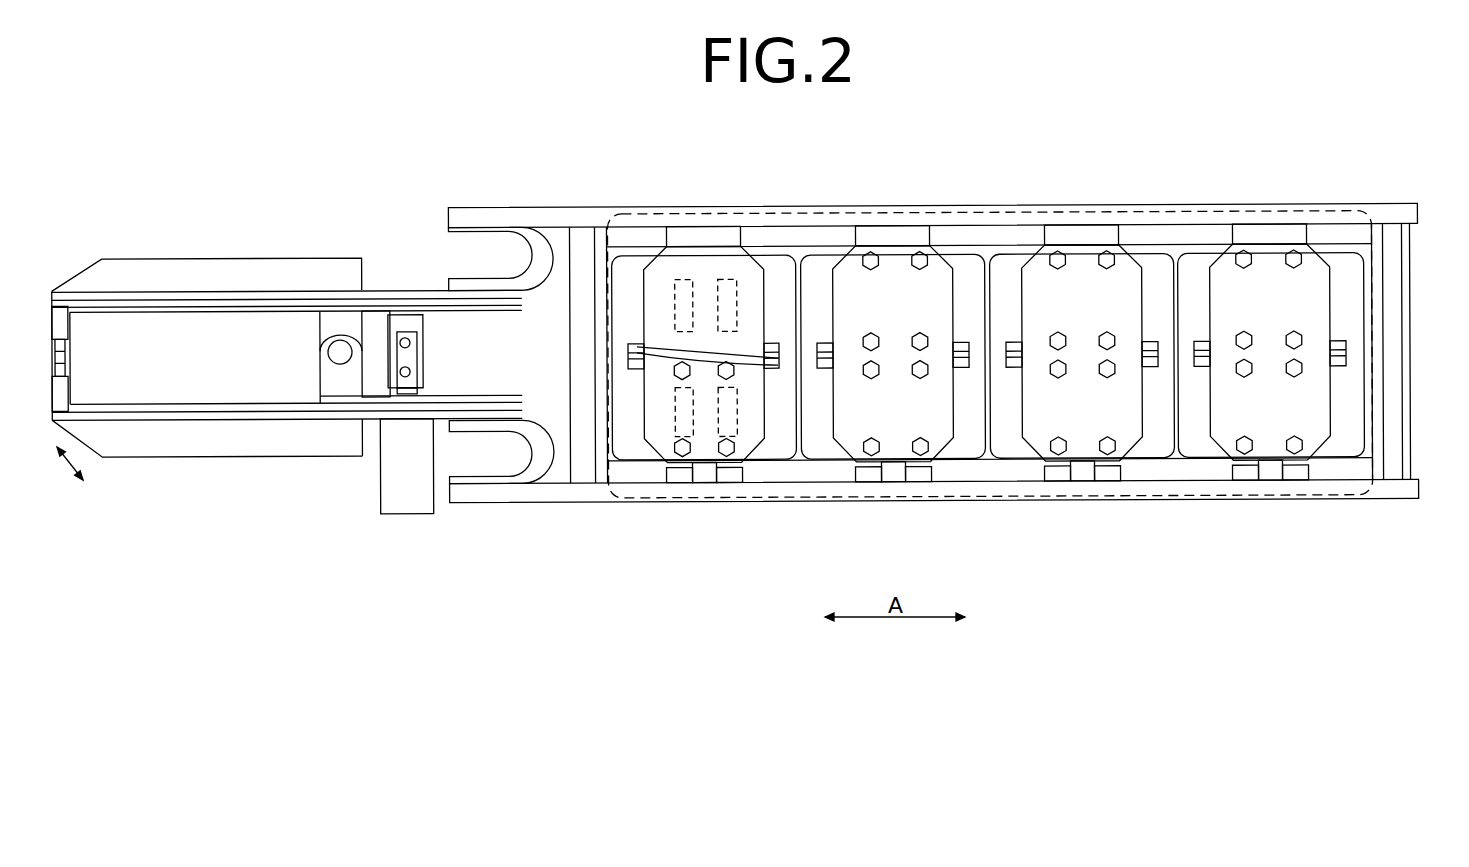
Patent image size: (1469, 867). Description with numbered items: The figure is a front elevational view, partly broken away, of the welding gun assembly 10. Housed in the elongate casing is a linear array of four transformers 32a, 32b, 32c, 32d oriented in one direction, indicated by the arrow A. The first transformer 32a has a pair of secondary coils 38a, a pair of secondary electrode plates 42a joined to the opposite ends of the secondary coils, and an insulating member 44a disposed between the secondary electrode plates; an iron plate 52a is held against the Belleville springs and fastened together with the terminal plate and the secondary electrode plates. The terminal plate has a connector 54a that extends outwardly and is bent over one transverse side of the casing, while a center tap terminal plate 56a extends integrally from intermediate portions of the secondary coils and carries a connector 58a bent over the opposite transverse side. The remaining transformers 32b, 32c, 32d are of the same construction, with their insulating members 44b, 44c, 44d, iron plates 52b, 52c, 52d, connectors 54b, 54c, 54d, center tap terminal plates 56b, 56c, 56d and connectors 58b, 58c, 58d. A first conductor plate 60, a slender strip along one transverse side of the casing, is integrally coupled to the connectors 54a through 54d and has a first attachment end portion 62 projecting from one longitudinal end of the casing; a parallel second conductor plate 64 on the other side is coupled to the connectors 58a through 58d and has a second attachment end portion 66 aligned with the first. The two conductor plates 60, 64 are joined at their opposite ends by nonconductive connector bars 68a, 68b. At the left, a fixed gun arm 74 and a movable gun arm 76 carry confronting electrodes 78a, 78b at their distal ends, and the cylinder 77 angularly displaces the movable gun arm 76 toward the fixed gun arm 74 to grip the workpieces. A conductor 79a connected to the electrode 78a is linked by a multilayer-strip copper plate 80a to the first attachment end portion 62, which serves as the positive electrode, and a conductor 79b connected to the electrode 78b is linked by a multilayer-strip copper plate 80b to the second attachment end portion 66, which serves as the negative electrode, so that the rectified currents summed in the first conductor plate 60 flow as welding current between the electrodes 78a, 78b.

The welding gun assembly 10 is at (935, 128).
The transformer 32a is at (628, 504).
The transformer 32b is at (847, 505).
The transformer 32c is at (1065, 505).
The transformer 32d is at (1230, 505).
The secondary coils 38a is at (687, 278).
The secondary electrode plates 42a is at (747, 267).
The insulating member 44a is at (792, 348).
The insulating member 44b is at (953, 348).
The insulating member 44c is at (1150, 350).
The insulating member 44d is at (1345, 353).
The iron plate 52a is at (653, 387).
The iron plate 52b is at (938, 412).
The iron plate 52c is at (1125, 415).
The iron plate 52d is at (1320, 410).
The connector 54a is at (710, 216).
The connector 54b is at (903, 235).
The connector 54c is at (1085, 235).
The connector 54d is at (1268, 233).
The center tap terminal plate 56a is at (705, 483).
The center tap terminal plate 56b is at (905, 483).
The center tap terminal plate 56c is at (1130, 483).
The center tap terminal plate 56d is at (1320, 483).
The connector 58a is at (665, 483).
The connector 58b is at (872, 483).
The connector 58c is at (1085, 483).
The connector 58d is at (1282, 483).
The first conductor plate 60 is at (1000, 213).
The first attachment end portion 62 is at (525, 215).
The second conductor plate 64 is at (988, 483).
The second attachment end portion 66 is at (503, 497).
The connector bar 68a is at (1397, 240).
The connector bar 68b is at (577, 323).
The fixed gun arm 74 is at (255, 277).
The movable gun arm 76 is at (212, 440).
The cylinder 77 is at (400, 495).
The electrode 78a is at (63, 348).
The electrode 78b is at (65, 373).
The conductor 79a is at (210, 297).
The conductor 79b is at (232, 410).
The multilayer-strip copper plate 80a is at (513, 277).
The multilayer-strip copper plate 80b is at (533, 467).